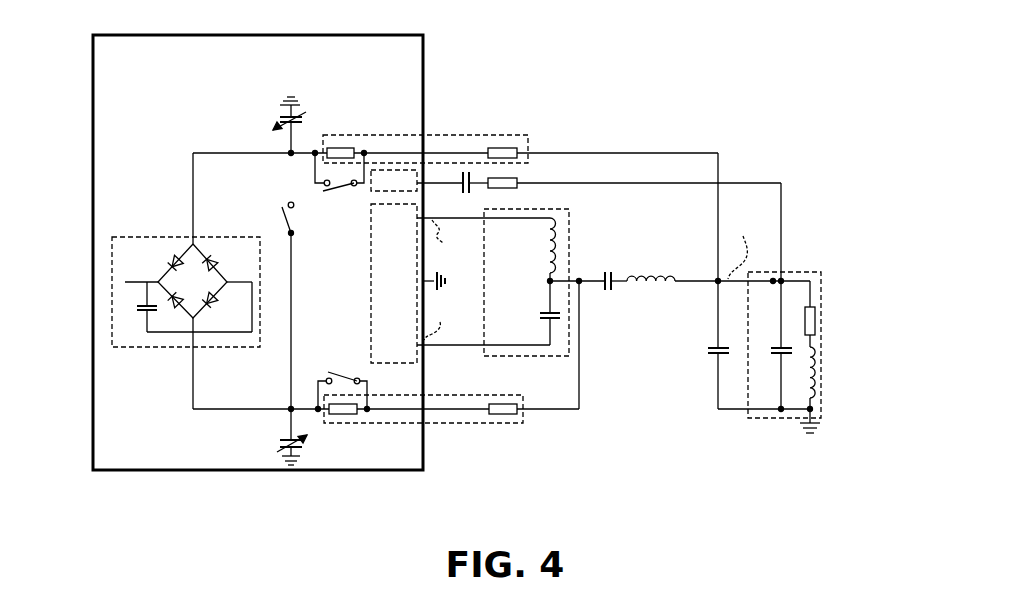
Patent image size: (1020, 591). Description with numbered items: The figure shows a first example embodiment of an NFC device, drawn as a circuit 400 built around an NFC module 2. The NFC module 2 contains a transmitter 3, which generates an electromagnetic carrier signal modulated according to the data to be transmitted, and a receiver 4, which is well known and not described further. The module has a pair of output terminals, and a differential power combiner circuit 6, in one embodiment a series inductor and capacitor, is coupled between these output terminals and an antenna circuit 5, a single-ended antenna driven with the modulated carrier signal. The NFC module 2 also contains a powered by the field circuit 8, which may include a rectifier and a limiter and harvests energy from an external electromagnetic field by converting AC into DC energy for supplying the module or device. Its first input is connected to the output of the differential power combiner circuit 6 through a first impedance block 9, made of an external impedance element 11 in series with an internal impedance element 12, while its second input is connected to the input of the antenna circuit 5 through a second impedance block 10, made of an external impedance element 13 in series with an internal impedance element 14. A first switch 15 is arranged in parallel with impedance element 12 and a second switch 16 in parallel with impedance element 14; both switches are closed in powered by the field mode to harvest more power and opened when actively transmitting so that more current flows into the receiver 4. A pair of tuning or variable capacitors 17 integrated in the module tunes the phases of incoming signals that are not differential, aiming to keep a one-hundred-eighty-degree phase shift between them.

The NFC module 2 is at (83, 199).
The transmitter circuit 400 is at (531, 68).
The powered by the field circuit 8 is at (158, 226).
The tuning or variable capacitors 17 is at (269, 105).
The second impedance block 10 is at (452, 121).
The impedance element 14 is at (344, 137).
The impedance element 13 is at (507, 137).
The second switch 16 is at (317, 196).
The receiver 4 is at (360, 192).
The transmitter 3 is at (362, 295).
The differential power combiner circuit 6 is at (559, 198).
The antenna circuit 5 is at (827, 261).
The first switch 15 is at (336, 361).
The first impedance block 9 is at (448, 435).
The impedance element 12 is at (343, 428).
The impedance element 11 is at (504, 431).